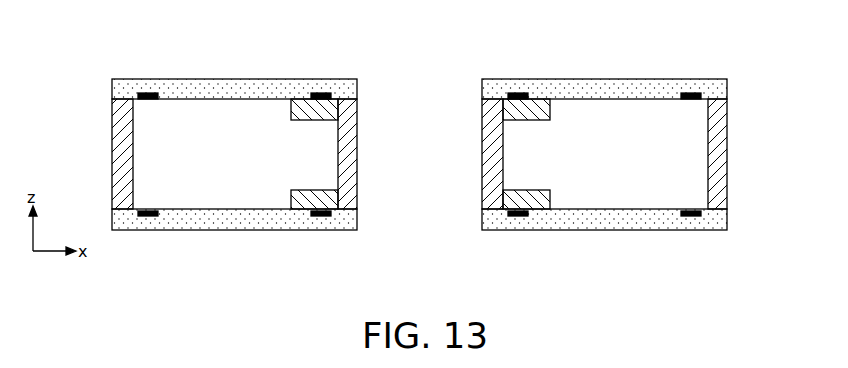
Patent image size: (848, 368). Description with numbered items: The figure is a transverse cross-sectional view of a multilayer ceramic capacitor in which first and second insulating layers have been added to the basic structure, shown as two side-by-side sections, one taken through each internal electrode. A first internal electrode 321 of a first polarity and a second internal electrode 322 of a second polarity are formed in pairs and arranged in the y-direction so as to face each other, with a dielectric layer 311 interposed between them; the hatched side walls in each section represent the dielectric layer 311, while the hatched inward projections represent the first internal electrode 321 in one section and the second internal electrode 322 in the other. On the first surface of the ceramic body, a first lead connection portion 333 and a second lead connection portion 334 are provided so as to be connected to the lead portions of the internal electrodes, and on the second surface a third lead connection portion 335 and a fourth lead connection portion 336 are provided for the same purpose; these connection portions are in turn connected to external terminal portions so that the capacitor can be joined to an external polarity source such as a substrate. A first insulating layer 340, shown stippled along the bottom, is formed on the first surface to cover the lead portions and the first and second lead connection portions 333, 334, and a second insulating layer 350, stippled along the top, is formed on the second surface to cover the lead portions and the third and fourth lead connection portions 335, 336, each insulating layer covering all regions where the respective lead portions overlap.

The dielectric layer 311 is at (350, 188).
The first internal electrode 321 is at (328, 148).
The second internal electrode 322 is at (698, 148).
The first lead connection portion 333 is at (143, 216).
The second lead connection portion 334 is at (327, 216).
The third lead connection portion 335 is at (146, 93).
The fourth lead connection portion 336 is at (329, 93).
The first insulating layer 340 is at (240, 228).
The second insulating layer 350 is at (241, 90).